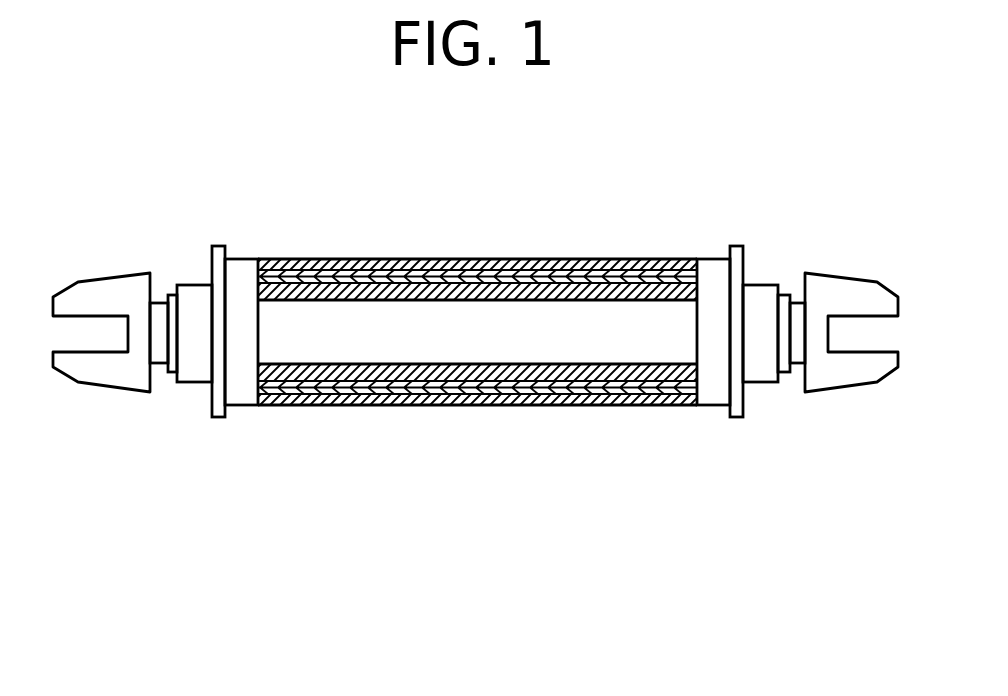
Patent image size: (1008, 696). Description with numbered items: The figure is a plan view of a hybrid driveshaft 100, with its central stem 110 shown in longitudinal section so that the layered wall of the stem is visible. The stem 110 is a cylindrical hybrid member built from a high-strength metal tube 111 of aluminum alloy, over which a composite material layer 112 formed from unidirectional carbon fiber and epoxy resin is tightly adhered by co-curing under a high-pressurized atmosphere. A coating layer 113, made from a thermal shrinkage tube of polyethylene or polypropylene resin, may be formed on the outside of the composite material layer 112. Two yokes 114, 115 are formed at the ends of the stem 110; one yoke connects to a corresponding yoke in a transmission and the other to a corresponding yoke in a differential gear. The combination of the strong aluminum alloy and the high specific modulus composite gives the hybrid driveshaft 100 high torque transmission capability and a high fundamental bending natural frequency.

The hybrid driveshaft 100 is at (430, 236).
The stem 110 is at (363, 405).
The metal tube 111 is at (541, 282).
The composite material layer 112 is at (588, 272).
The coating layer 113 is at (657, 263).
The yoke 114 is at (815, 375).
The yoke 115 is at (110, 375).